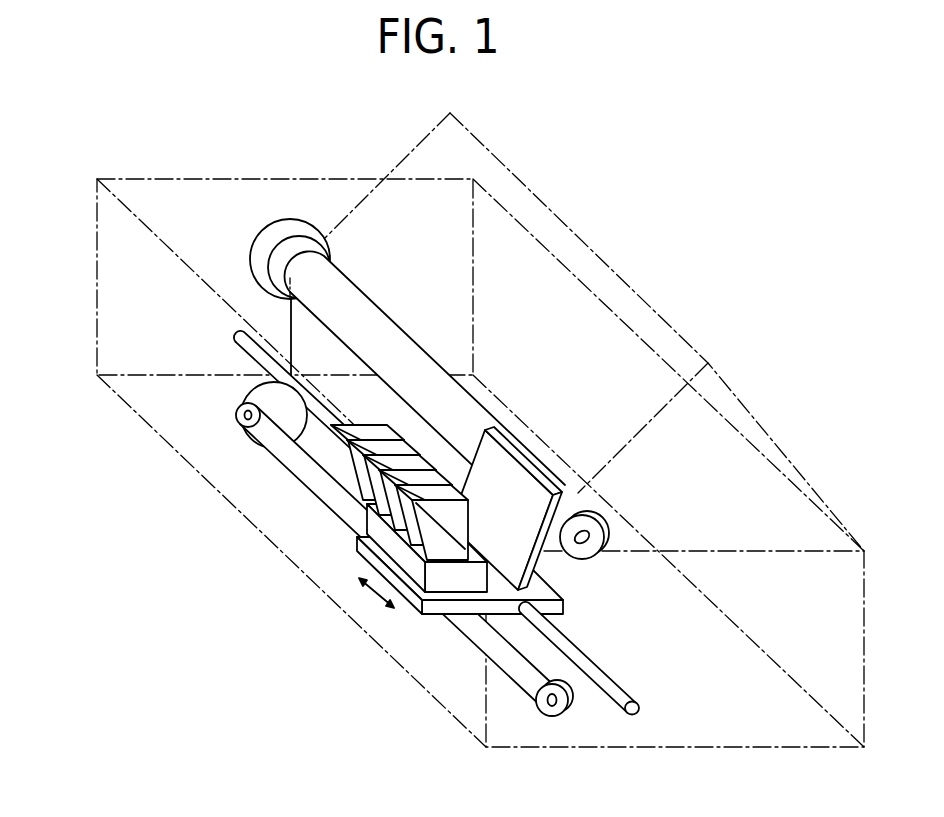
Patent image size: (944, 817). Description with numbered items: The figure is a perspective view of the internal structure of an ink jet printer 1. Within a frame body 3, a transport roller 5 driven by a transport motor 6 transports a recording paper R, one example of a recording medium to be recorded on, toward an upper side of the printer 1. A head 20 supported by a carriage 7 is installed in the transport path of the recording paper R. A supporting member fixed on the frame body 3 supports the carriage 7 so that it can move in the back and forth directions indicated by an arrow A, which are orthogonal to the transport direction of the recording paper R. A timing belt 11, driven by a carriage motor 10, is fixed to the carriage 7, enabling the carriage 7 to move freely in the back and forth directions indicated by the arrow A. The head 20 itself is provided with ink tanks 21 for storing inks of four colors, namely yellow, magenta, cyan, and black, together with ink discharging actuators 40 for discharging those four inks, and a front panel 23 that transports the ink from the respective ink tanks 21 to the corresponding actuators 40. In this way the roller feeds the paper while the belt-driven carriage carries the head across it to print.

The ink jet printer 1 is at (69, 234).
The frame body 3 is at (272, 178).
The recording paper R is at (560, 217).
The transport roller 5 is at (310, 272).
The transport motor 6 is at (303, 225).
The carriage 7 is at (413, 601).
The carriage motor 10 is at (240, 393).
The timing belt 11 is at (270, 466).
The head 20 is at (396, 432).
The ink tanks 21 is at (395, 548).
The front panel 23 is at (533, 567).
The ink discharging actuators 40 is at (562, 515).
The arrow A is at (377, 593).